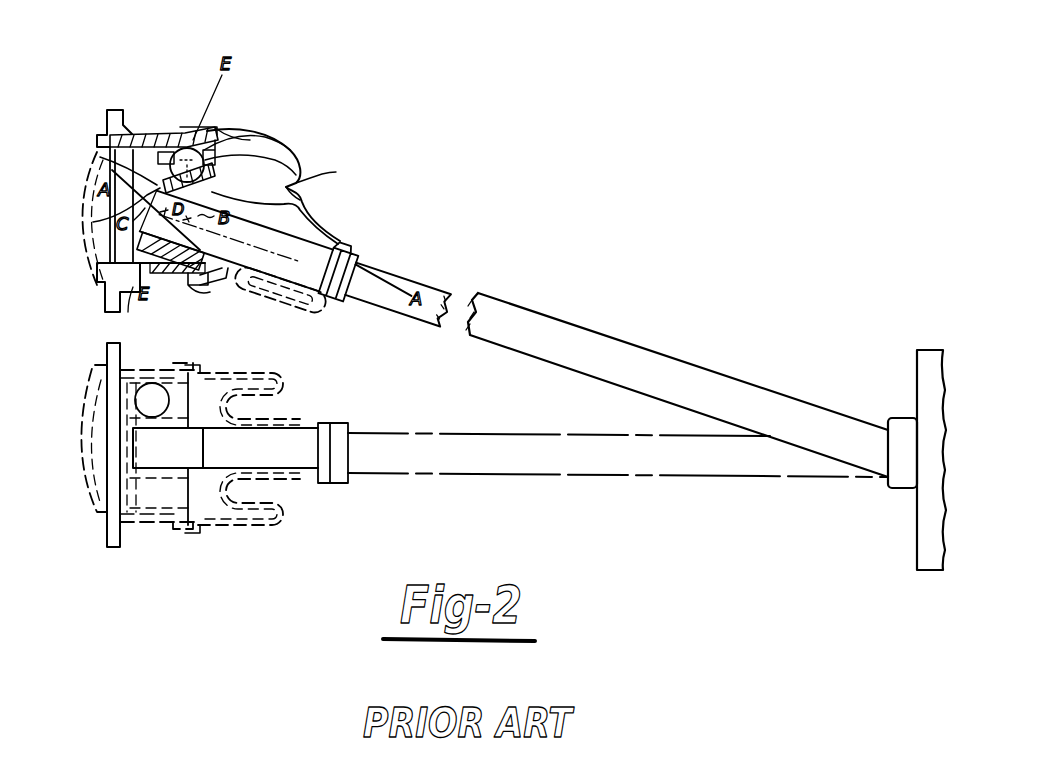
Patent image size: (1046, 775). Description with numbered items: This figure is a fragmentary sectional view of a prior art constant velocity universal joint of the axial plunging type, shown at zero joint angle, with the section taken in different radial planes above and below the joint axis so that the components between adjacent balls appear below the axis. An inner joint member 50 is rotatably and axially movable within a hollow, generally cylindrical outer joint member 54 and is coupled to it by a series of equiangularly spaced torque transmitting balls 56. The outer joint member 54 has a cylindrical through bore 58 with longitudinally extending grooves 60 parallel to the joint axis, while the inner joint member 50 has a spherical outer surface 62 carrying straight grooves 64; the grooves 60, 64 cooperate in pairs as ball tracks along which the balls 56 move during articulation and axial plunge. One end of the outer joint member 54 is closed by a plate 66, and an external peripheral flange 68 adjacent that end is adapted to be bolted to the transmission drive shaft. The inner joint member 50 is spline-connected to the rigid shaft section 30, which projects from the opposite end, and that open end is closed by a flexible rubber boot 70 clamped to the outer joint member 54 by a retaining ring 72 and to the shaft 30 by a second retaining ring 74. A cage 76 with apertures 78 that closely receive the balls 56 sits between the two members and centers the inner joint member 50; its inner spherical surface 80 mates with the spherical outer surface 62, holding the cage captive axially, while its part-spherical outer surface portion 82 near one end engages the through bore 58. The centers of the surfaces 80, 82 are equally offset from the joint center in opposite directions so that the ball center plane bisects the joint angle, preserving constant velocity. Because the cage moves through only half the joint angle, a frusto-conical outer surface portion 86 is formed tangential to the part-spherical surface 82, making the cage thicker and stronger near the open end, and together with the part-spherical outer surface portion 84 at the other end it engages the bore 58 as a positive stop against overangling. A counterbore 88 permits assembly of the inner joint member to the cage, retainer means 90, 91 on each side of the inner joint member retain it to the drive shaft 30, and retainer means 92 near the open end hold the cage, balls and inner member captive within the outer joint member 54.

The rigid shaft section 30 is at (297, 257).
The inner joint member 50 is at (240, 281).
The outer joint member 54 is at (138, 136).
The torque transmitting balls 56 is at (227, 130).
The cylindrical through bore 58 is at (100, 267).
The longitudinally extending grooves 60 is at (97, 138).
The spherical outer surface 62 is at (176, 268).
The straight grooves 64 is at (336, 172).
The plate 66 is at (83, 190).
The external peripheral flange 68 is at (107, 112).
The flexible rubber boot 70 is at (300, 166).
The retaining ring 72 is at (193, 128).
The second retaining ring 74 is at (357, 237).
The cage 76 is at (293, 157).
The apertures 78 is at (293, 137).
The inner spherical surface 80 is at (165, 273).
The part-spherical outer surface portion 82 is at (190, 286).
The part-spherical outer surface portion 84 is at (202, 285).
The frusto-conical outer surface portion 86 is at (133, 287).
The counterbore 88 is at (100, 157).
The retainer means 90 is at (93, 222).
The retainer means 91 is at (297, 206).
The retainer means 92 is at (250, 140).